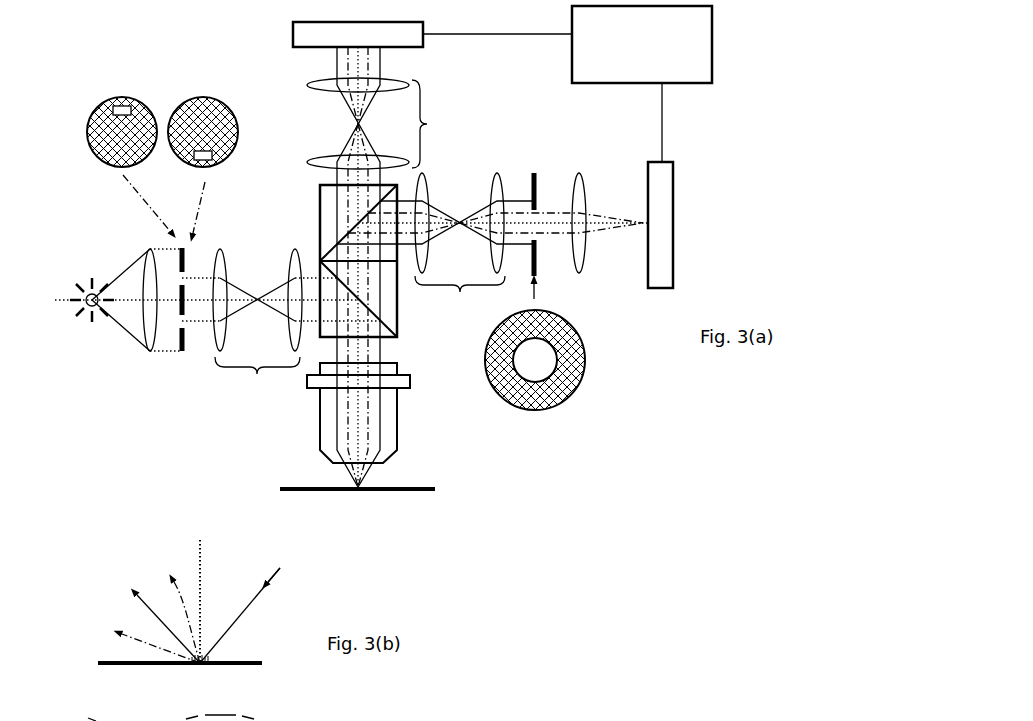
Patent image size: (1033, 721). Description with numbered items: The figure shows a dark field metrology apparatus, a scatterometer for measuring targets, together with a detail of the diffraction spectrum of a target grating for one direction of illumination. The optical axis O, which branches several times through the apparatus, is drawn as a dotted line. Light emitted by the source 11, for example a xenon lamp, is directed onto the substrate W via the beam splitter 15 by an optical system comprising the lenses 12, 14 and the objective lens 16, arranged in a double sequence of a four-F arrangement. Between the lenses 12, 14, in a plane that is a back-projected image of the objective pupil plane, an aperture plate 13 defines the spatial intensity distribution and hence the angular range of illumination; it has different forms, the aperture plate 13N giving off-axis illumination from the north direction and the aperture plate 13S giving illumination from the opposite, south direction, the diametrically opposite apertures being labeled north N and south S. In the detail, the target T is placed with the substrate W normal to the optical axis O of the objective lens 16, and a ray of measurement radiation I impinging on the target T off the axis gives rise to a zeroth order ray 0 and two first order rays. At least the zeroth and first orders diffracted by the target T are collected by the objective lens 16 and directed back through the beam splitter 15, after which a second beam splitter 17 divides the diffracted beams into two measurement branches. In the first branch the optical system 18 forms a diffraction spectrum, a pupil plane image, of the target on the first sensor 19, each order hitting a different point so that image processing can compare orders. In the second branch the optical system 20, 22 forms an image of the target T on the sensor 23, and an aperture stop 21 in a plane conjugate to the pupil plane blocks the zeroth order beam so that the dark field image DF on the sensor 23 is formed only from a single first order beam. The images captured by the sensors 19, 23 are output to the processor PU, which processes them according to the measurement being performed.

In FIG. 3A, the source 11 is at (100, 325).
In FIG. 3A, the lens 12 is at (150, 353).
In FIG. 3A, the aperture plate 13 is at (179, 321).
In FIG. 3A, the aperture plate north form 13N is at (119, 96).
In FIG. 3A, the aperture plate south form 13S is at (213, 97).
In FIG. 3A, the lens 14 is at (281, 325).
In FIG. 3A, the beam splitter 15 is at (397, 303).
In FIG. 3A, the objective lens 16 is at (397, 420).
In FIG. 3A, the second beam splitter 17 is at (320, 218).
In FIG. 3A, the optical system 18 is at (382, 123).
In FIG. 3A, the first sensor 19 is at (420, 22).
In FIG. 3A, the optical system 20 is at (460, 246).
In FIG. 3A, the aperture stop 21 is at (534, 170).
In FIG. 3A, the optical system 22 is at (580, 275).
In FIG. 3A, the sensor 23 is at (673, 178).
In FIG. 3A, the processor PU is at (630, 56).
In FIG. 3A, the dark field image DF is at (620, 205).
In FIG. 3A, the substrate W is at (290, 491).
In FIG. 3B, the substrate W is at (128, 661).
In FIG. 3A, the optical axis O is at (277, 297).
In FIG. 3A, the north aperture N is at (159, 277).
In FIG. 3A, the south aperture S is at (159, 319).
In FIG. 3B, the target T is at (226, 647).
In FIG. 3B, the ray of measurement radiation I is at (243, 604).
In FIG. 3B, the zeroth order ray 0 is at (169, 601).